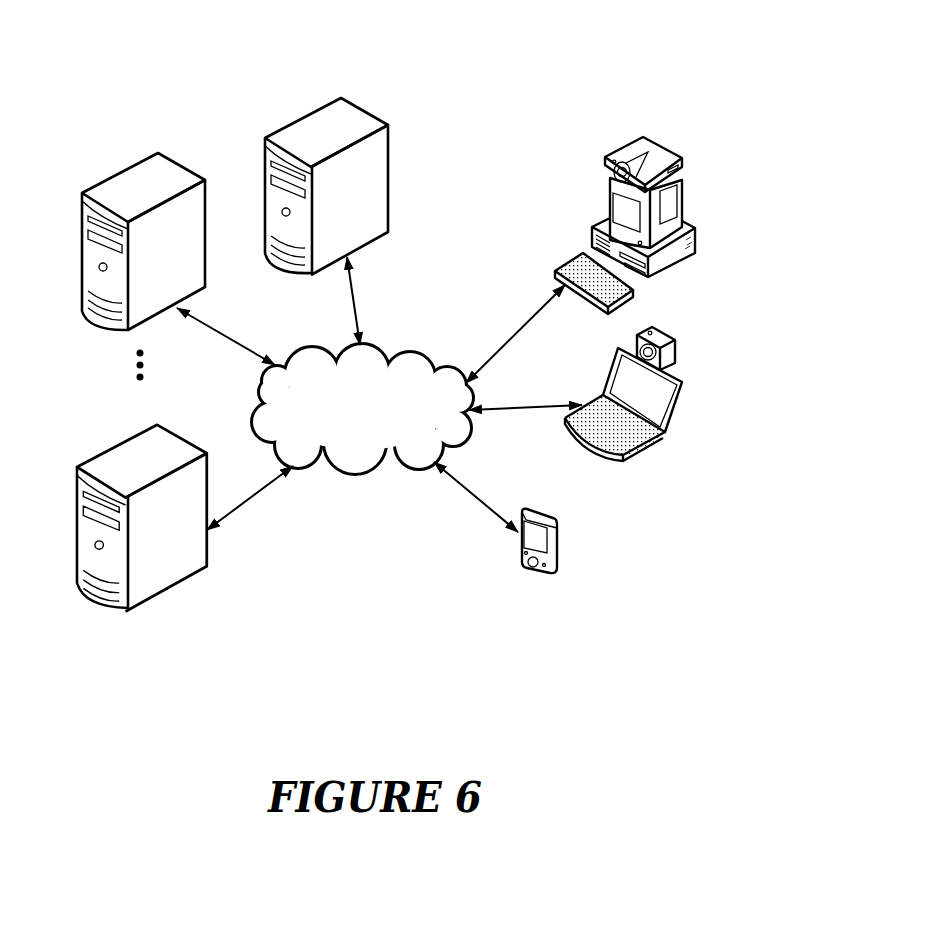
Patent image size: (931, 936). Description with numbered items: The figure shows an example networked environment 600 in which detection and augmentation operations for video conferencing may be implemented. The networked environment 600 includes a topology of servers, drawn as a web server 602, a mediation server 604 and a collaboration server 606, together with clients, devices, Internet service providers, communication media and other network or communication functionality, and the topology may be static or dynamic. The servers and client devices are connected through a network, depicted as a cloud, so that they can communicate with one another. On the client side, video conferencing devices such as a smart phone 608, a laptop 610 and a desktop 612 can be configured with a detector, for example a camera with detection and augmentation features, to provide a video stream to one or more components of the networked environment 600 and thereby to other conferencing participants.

The networked environment 600 is at (550, 82).
The web server 602 is at (313, 117).
The mediation server 604 is at (115, 175).
The collaboration server 606 is at (115, 452).
The smart phone 608 is at (560, 523).
The laptop 610 is at (698, 368).
The desktop 612 is at (575, 218).